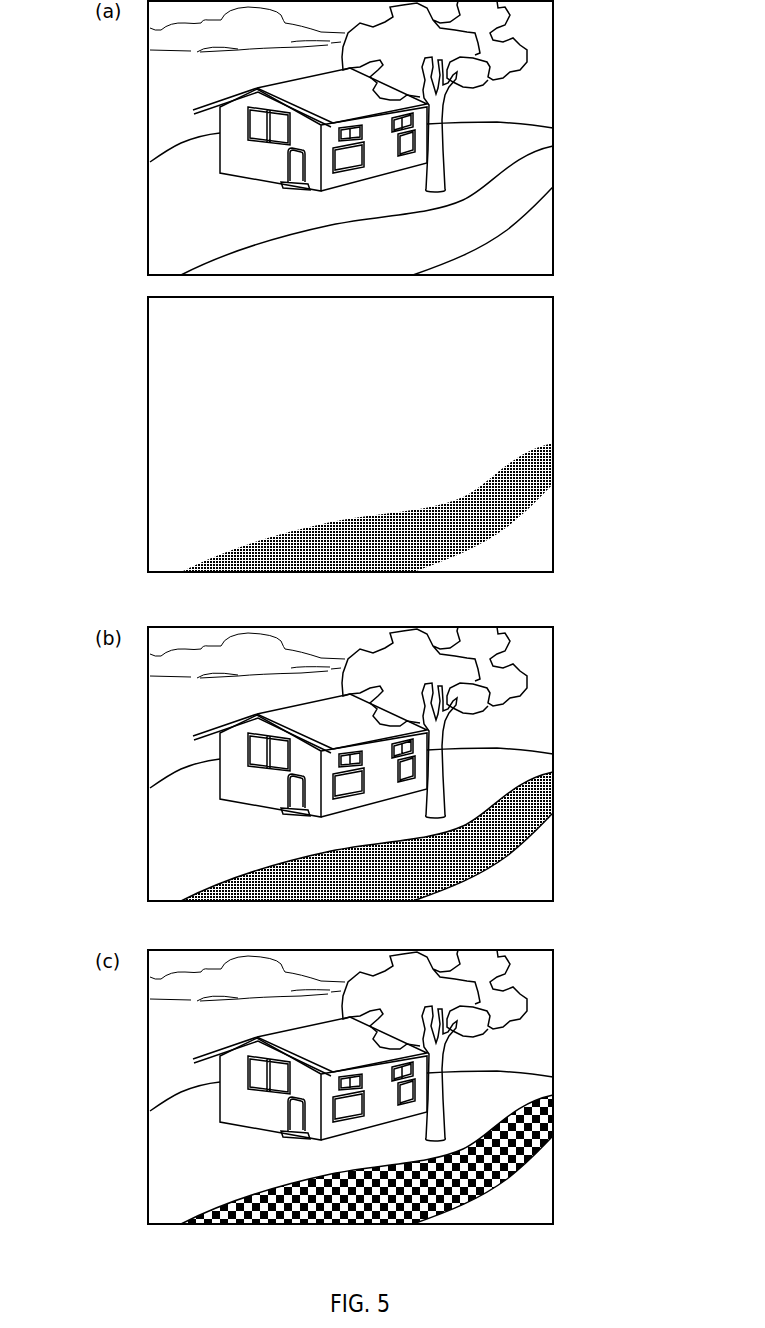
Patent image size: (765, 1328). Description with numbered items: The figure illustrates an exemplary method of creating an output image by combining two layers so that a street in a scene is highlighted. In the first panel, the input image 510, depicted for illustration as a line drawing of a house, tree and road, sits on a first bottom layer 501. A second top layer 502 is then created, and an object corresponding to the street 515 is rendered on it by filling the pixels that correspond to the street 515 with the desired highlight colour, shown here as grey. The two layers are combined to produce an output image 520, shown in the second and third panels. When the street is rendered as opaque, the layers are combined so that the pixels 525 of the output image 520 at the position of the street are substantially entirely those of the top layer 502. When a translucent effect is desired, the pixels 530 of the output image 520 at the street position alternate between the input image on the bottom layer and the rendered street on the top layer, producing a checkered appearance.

The input image 510 is at (128, 98).
The first (bottom) layer 501 is at (128, 191).
The second (top) layer 502 is at (128, 433).
The street 515 is at (537, 469).
The output image 520 is at (128, 699).
The pixels of the output image in the position of the street (opaque) 525 is at (537, 805).
The pixels of the output image in the position of the street (translucent) 530 is at (538, 1120).